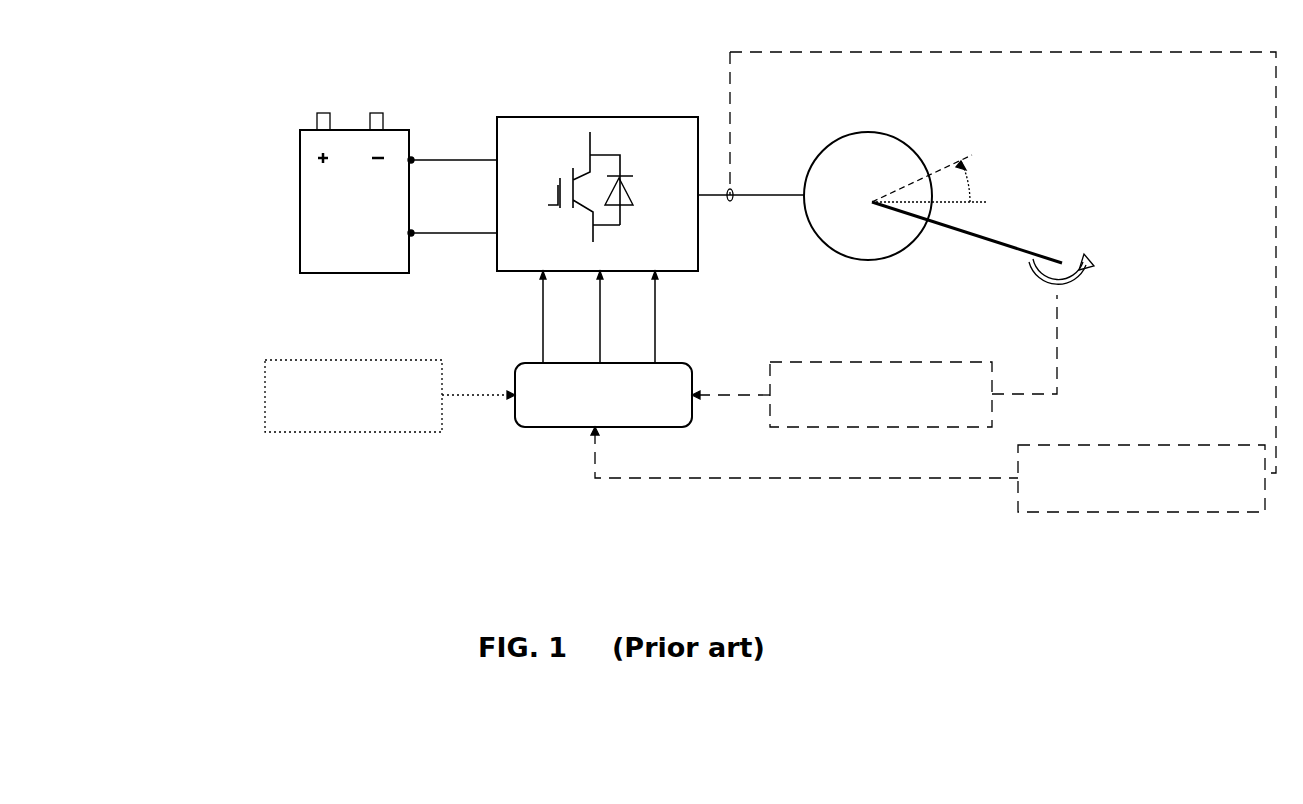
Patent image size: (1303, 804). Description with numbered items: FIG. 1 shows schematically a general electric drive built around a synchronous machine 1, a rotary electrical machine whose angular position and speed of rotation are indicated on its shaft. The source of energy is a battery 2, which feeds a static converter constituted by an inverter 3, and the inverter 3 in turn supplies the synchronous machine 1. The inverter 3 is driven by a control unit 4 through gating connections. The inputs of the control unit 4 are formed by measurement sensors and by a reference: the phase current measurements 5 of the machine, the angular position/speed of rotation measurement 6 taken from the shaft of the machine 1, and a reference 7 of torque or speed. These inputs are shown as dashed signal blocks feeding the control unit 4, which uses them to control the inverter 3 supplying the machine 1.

The synchronous machine 1 is at (830, 148).
The battery 2 is at (398, 129).
The inverter 3 is at (580, 117).
The control unit 4 is at (553, 430).
The phase current measurements 5 is at (1145, 445).
The angular position/speed of rotation measurement 6 is at (873, 362).
The reference 7 is at (360, 360).